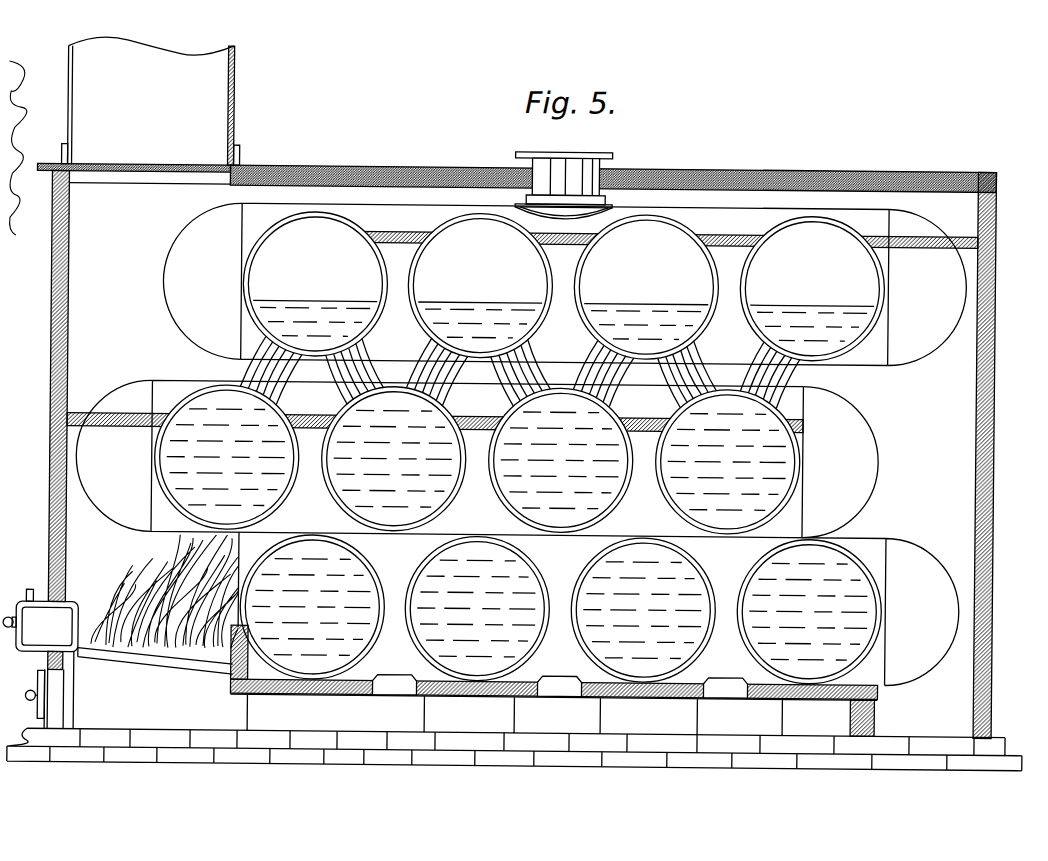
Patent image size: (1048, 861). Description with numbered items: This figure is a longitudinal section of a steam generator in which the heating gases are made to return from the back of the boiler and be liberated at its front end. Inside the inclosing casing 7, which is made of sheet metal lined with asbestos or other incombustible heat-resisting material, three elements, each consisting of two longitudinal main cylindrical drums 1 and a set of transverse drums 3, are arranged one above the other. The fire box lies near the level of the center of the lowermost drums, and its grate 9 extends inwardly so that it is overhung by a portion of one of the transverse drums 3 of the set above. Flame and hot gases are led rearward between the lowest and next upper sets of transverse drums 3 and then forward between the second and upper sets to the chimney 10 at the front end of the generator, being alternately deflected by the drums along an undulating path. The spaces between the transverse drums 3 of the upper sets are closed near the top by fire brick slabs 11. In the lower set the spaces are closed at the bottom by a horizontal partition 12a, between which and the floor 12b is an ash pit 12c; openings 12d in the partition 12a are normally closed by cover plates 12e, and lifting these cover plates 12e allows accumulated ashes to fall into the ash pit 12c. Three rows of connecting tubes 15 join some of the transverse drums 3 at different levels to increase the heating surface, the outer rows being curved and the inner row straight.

The main cylindrical drum 1 is at (358, 206).
The transverse drum 3 is at (519, 447).
The inclosing casing 7 is at (723, 168).
The grate 9 is at (142, 658).
The chimney 10 is at (151, 101).
The fire brick slab 11 is at (405, 234).
The horizontal partition 12a is at (655, 697).
The floor 12b is at (757, 750).
The ash pit 12c is at (516, 714).
The opening 12d is at (532, 690).
The cover plate 12e is at (370, 690).
The connecting tube 15 is at (423, 347).